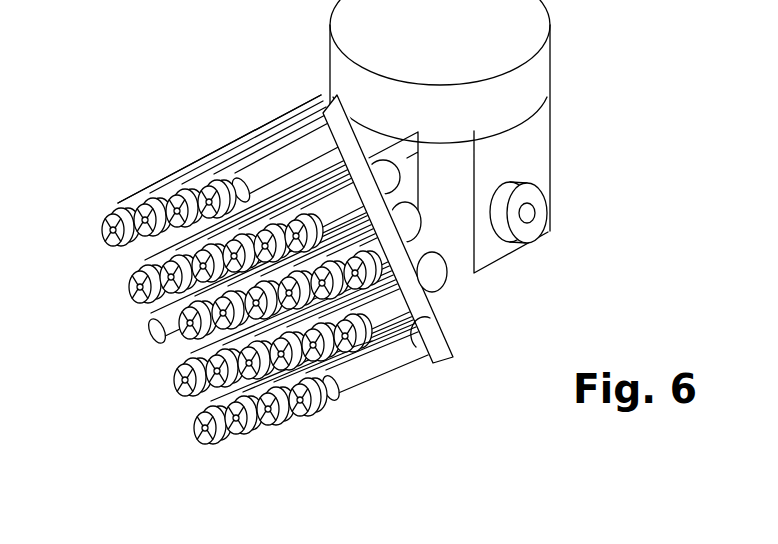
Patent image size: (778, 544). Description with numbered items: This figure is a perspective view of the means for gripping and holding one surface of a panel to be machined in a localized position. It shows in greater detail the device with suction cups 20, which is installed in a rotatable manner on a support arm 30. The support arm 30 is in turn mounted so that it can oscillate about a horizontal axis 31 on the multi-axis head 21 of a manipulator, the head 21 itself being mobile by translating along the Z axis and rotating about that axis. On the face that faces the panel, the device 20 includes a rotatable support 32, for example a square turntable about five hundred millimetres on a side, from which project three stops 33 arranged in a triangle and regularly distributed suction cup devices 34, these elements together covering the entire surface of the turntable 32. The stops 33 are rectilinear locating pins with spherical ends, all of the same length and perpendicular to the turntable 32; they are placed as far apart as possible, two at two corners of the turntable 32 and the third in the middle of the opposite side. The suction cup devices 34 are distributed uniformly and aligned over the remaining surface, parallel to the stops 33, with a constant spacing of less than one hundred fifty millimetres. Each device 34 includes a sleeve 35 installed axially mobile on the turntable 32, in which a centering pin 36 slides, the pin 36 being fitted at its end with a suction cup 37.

The device with suction cups 20 is at (177, 140).
The multi-axis head 21 is at (553, 63).
The support arm 30 is at (545, 138).
The horizontal axis 31 is at (313, 52).
The rotatable support 32 is at (450, 357).
The stops 33 is at (277, 165).
The suction cup devices 34 is at (167, 178).
The sleeve 35 is at (433, 284).
The centering pin 36 is at (353, 347).
The suction cup 37 is at (411, 336).